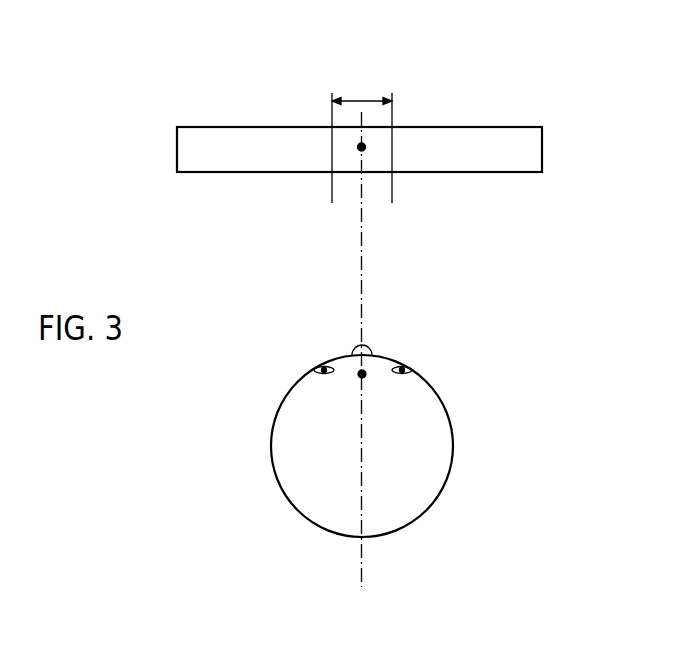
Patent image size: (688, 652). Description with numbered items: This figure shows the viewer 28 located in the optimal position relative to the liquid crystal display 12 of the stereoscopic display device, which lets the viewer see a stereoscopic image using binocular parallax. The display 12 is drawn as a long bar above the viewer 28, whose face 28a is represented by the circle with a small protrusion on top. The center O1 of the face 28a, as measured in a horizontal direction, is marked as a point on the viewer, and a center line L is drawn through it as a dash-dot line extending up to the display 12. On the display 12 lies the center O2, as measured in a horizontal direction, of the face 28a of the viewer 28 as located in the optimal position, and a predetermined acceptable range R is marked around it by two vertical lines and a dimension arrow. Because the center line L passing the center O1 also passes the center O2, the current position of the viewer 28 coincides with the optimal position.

The liquid crystal display 12 is at (493, 148).
The acceptable range R is at (358, 102).
The center of the face of the viewer as located in the optimal position O2 is at (365, 147).
The viewer 28 is at (287, 497).
The face 28a is at (340, 352).
The center of the face O1 is at (366, 371).
The center line L is at (362, 570).